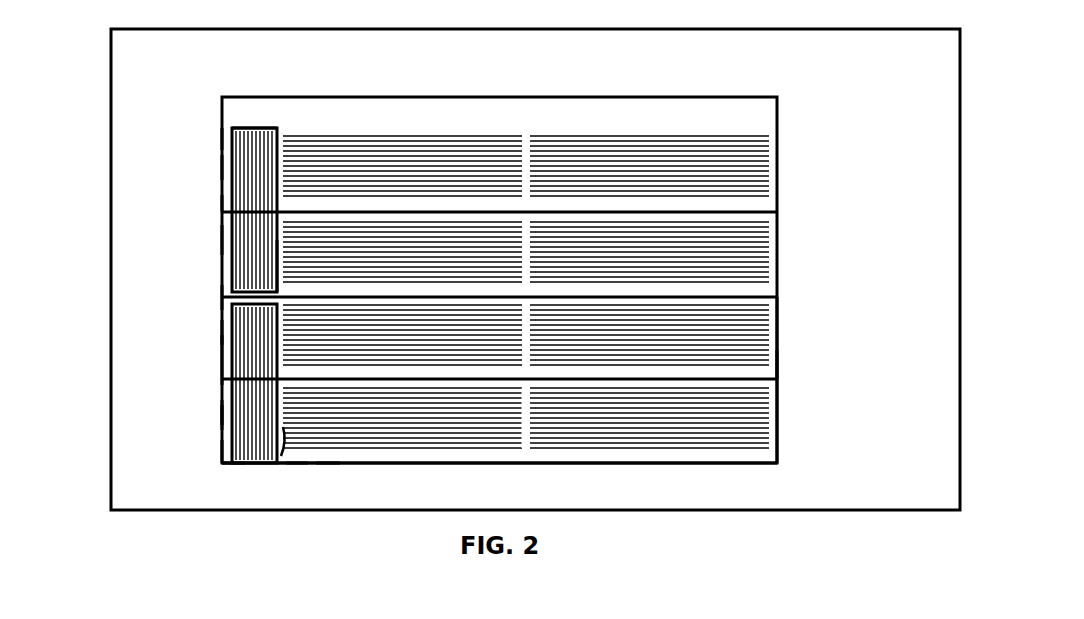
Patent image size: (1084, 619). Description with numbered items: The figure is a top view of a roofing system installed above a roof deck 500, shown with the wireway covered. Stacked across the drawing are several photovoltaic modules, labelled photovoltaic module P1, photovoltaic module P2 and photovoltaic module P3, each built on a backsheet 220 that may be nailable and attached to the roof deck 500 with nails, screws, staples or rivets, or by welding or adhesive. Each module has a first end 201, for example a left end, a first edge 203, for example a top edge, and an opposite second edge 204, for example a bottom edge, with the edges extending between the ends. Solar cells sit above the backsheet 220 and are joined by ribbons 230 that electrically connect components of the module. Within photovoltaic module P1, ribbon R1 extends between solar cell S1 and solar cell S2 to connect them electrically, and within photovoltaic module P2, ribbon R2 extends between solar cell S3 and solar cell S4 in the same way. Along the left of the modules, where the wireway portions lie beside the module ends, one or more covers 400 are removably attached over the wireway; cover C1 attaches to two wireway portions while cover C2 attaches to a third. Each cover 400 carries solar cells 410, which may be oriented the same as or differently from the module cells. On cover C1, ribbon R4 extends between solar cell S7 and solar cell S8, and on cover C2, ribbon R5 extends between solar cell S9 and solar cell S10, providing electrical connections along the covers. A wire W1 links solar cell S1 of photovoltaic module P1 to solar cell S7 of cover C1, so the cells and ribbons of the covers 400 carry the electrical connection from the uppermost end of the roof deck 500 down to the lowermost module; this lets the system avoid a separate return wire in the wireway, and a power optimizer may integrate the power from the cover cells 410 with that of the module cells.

The roof deck 500 is at (690, 67).
The backsheet 220 is at (538, 260).
The ribbon 230 is at (426, 118).
The cover 400 is at (298, 167).
The solar cell 410 is at (199, 387).
The first end 201 is at (173, 406).
The first edge 203 is at (553, 443).
The second edge 204 is at (819, 362).
The photovoltaic module P1 is at (558, 434).
The photovoltaic module P2 is at (541, 332).
The photovoltaic module P3 is at (553, 254).
The ribbon R1 is at (176, 342).
The ribbon R2 is at (224, 266).
The ribbon R4 is at (168, 493).
The ribbon R5 is at (213, 82).
The solar cell S1 is at (317, 521).
The solar cell S2 is at (379, 511).
The solar cell S3 is at (173, 289).
The solar cell S4 is at (172, 192).
The solar cell S7 is at (137, 424).
The solar cell S8 is at (137, 321).
The solar cell S9 is at (137, 226).
The solar cell S10 is at (137, 115).
The cover C1 is at (145, 367).
The cover C2 is at (139, 155).
The wire W1 is at (218, 510).